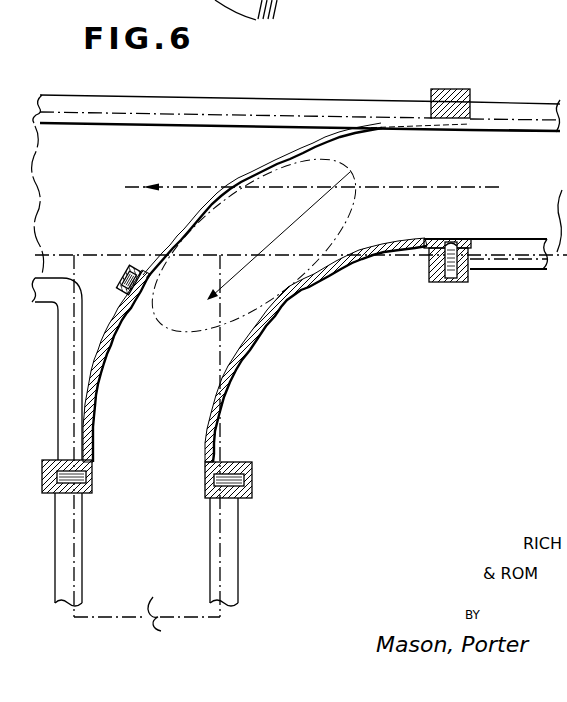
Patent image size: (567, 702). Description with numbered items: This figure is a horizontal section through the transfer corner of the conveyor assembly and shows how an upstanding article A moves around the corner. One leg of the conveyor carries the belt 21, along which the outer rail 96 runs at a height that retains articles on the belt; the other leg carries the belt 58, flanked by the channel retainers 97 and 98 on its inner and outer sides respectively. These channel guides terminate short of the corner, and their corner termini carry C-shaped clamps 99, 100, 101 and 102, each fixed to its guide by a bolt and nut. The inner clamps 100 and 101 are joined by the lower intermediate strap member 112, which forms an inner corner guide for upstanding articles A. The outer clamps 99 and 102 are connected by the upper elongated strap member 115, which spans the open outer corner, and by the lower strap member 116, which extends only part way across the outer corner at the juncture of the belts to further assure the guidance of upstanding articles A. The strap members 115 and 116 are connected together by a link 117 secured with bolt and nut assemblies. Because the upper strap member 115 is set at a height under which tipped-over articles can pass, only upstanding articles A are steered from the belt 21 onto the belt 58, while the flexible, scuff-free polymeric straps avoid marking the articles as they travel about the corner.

The belt 21 is at (503, 141).
The belt 58 is at (166, 625).
The outer rail 96 is at (349, 112).
The channel retainer 97 is at (233, 532).
The channel retainer 98 is at (62, 377).
The C-shaped clamp 99 is at (452, 89).
The C-shaped clamp 100 is at (457, 286).
The C-shaped clamp 101 is at (255, 477).
The C-shaped clamp 102 is at (63, 497).
The lower intermediate strap member 112 is at (351, 263).
The upper elongated strap member 115 is at (255, 173).
The lower strap member 116 is at (110, 353).
The link 117 is at (139, 267).
The upstanding article A is at (278, 255).